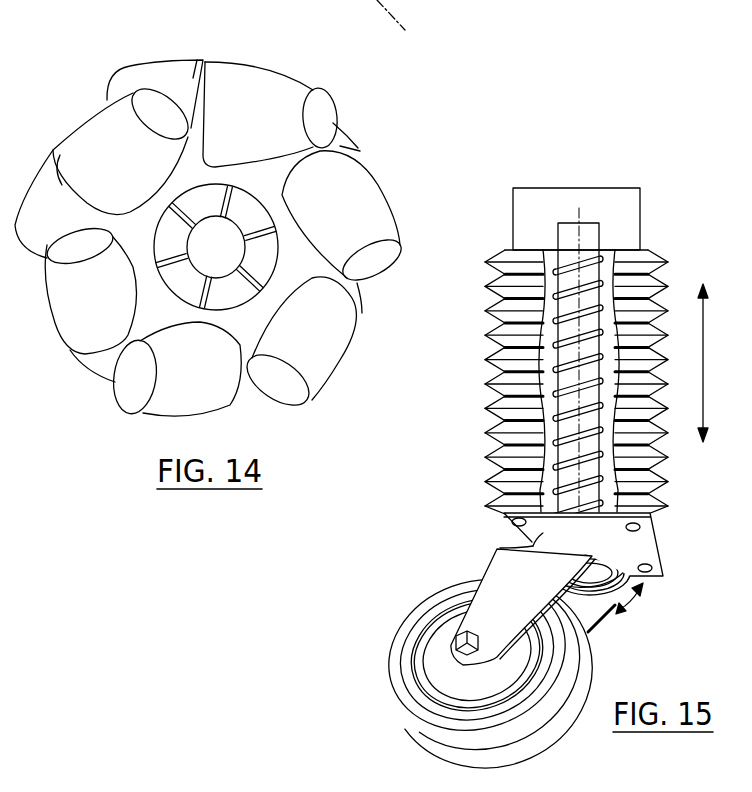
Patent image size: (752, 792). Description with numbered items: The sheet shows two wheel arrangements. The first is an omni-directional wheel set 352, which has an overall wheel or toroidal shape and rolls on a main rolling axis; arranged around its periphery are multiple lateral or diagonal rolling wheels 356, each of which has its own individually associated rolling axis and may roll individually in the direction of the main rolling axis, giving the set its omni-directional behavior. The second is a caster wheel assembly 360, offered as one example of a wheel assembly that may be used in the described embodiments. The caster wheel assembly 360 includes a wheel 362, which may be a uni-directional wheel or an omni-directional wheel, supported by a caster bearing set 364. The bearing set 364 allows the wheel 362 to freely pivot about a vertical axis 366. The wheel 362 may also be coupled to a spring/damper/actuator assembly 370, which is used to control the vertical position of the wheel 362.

In FIG. 14, the omni-directional wheel set 352 is at (221, 234).
In FIG. 14, the lateral or diagonal rolling wheels 356 is at (362, 208).
In FIG. 15, the caster wheel assembly 360 is at (640, 187).
In FIG. 15, the wheel 362 is at (517, 752).
In FIG. 15, the caster bearing set 364 is at (527, 533).
In FIG. 15, the vertical axis 366 is at (580, 207).
In FIG. 15, the spring/damper/actuator assembly 370 is at (640, 250).